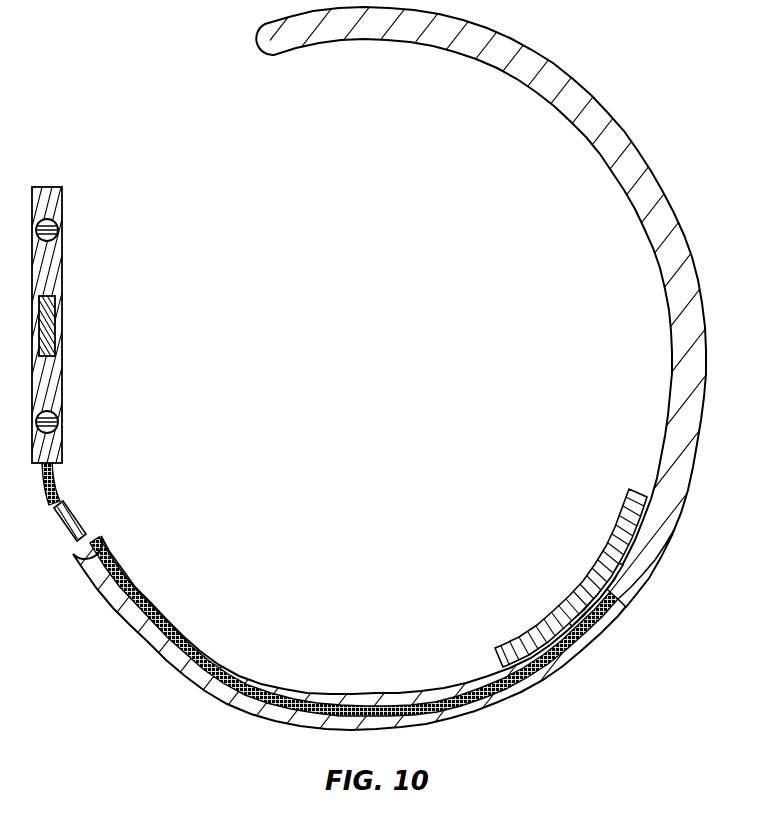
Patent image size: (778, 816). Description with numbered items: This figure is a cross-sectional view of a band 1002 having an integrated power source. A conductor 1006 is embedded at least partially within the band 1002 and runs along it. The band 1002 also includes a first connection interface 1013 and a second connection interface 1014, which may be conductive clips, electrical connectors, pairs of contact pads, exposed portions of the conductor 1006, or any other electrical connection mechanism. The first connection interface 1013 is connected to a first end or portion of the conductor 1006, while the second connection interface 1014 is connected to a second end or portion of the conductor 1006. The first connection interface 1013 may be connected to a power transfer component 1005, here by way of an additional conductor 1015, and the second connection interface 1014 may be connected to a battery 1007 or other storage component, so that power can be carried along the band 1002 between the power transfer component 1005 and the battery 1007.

The band 1002 is at (285, 684).
The power transfer component 1005 is at (65, 263).
The conductor 1006 is at (344, 704).
The battery 1007 is at (606, 538).
The first connection interface 1013 is at (84, 521).
The second connection interface 1014 is at (606, 590).
The additional conductor 1015 is at (56, 486).